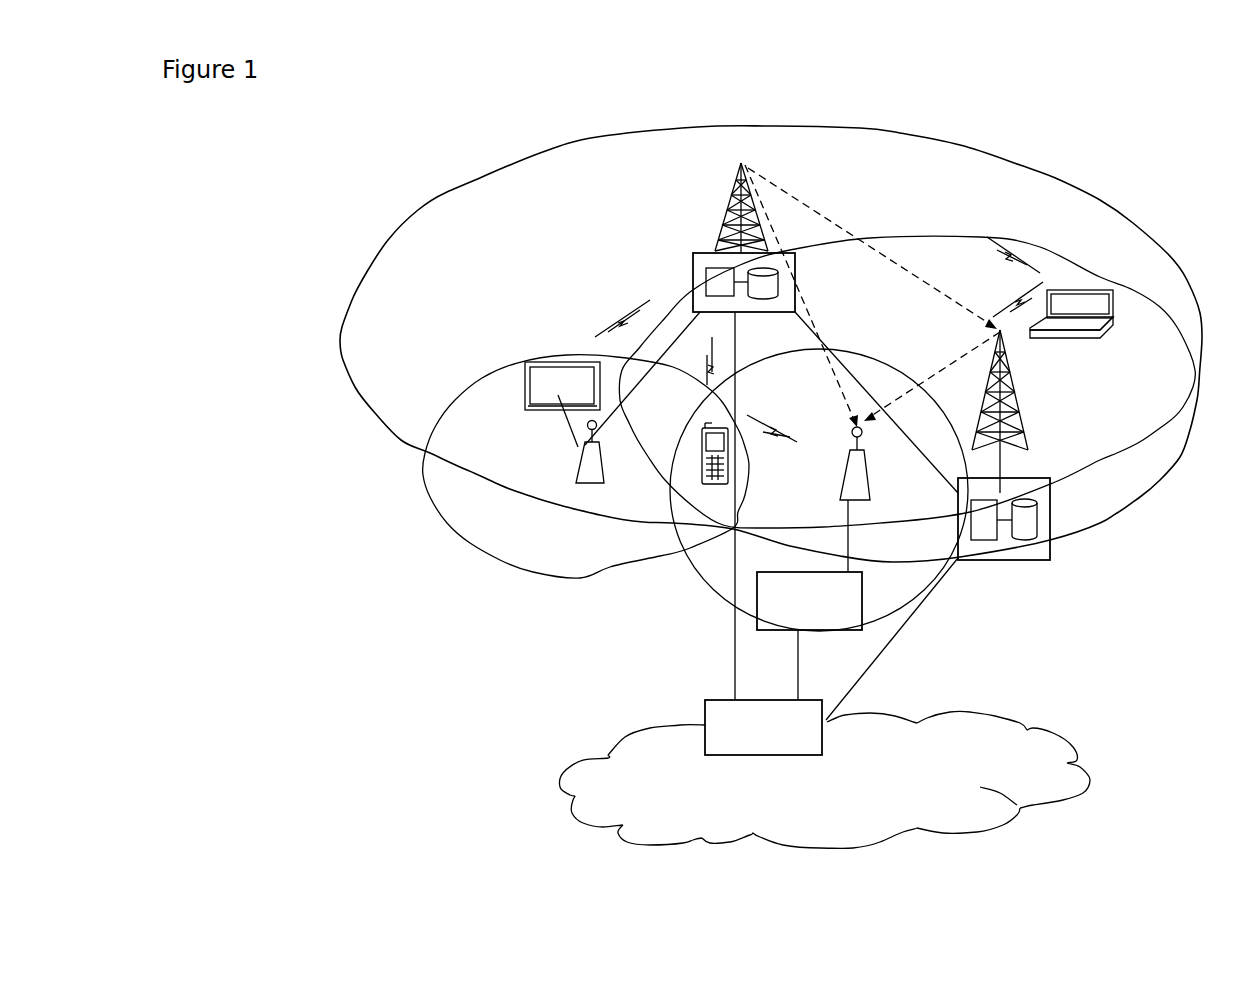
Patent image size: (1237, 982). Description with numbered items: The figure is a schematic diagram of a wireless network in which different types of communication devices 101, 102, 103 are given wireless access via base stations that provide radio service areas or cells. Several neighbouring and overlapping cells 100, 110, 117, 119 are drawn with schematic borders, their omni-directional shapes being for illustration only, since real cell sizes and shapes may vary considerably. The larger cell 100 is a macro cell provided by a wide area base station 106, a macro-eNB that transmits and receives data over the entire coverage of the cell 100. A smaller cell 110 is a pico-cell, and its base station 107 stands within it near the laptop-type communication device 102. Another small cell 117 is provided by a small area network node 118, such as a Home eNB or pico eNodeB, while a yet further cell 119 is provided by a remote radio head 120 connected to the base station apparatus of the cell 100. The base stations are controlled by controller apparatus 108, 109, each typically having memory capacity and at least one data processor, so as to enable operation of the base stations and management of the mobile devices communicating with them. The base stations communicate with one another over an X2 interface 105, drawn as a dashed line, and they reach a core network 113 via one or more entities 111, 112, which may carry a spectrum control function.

The larger cell 100 is at (414, 203).
The communication device 101 is at (548, 364).
The communication device 102 is at (1108, 330).
The communication device 103 is at (698, 448).
The X2 interface 105 is at (838, 223).
The wide area base station 106 is at (720, 232).
The base station 107 is at (1008, 415).
The controller apparatus 108 is at (693, 270).
The controller apparatus 109 is at (1048, 552).
The smaller cell 110 is at (1147, 497).
The entity 111 is at (763, 605).
The entity 112 is at (705, 700).
The core network 113 is at (637, 763).
The cell 117 is at (893, 355).
The small area network node 118 is at (850, 482).
The further cell 119 is at (491, 570).
The remote radio head 120 is at (580, 452).